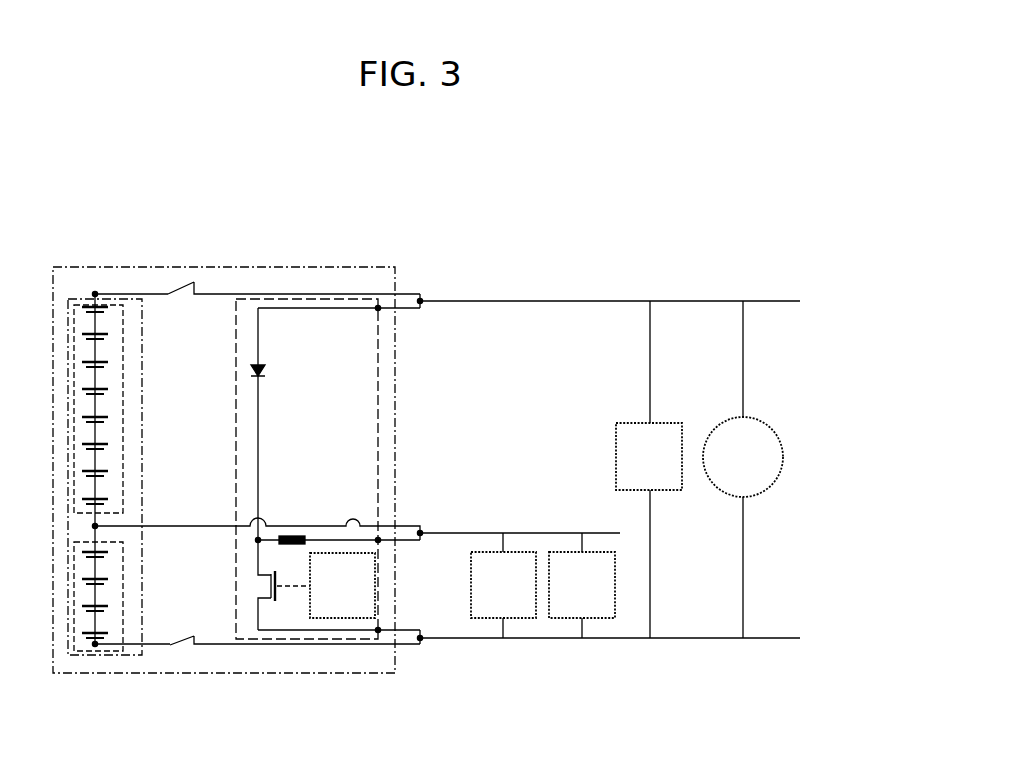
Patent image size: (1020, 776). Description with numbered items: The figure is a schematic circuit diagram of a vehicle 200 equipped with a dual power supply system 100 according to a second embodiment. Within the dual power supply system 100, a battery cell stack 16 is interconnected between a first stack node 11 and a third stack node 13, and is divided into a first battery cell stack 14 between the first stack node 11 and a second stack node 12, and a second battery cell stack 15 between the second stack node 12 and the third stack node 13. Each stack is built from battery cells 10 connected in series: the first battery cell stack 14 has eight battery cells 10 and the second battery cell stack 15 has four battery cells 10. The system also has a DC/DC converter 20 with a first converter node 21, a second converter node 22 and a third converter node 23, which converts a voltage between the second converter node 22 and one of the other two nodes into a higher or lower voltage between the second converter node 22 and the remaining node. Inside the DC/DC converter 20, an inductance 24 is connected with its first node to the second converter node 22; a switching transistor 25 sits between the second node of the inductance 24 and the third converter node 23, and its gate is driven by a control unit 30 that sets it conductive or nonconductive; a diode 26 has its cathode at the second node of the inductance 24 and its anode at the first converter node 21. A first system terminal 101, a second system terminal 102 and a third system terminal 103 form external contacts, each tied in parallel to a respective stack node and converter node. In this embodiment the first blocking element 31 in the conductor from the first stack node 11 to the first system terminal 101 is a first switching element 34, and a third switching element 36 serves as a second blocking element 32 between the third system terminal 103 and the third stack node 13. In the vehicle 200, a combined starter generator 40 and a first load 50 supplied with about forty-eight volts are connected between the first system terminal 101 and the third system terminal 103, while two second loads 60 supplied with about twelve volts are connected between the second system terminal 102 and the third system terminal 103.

The battery cell 10 is at (98, 472).
The first stack node 11 is at (95, 291).
The second stack node 12 is at (92, 526).
The third stack node 13 is at (95, 647).
The first battery cell stack 14 is at (123, 352).
The second battery cell stack 15 is at (123, 589).
The battery cell stack 16 is at (142, 463).
The DC/DC converter 20 is at (236, 405).
The first converter node 21 is at (382, 300).
The second converter node 22 is at (380, 542).
The third converter node 23 is at (367, 633).
The inductance 24 is at (292, 535).
The switching transistor 25 is at (280, 592).
The diode 26 is at (263, 371).
The control unit 30 is at (340, 620).
The first blocking element 31 is at (257, 239).
The first switching element 34 is at (191, 281).
The second blocking element 32 is at (257, 677).
The third switching element 36 is at (183, 646).
The combined starter generator 40 is at (769, 425).
The first load 50 is at (616, 456).
The second load 60 is at (522, 622).
The dual power supply system 100 is at (316, 266).
The first system terminal 101 is at (423, 300).
The second system terminal 102 is at (421, 531).
The third system terminal 103 is at (421, 641).
The vehicle 200 is at (626, 233).